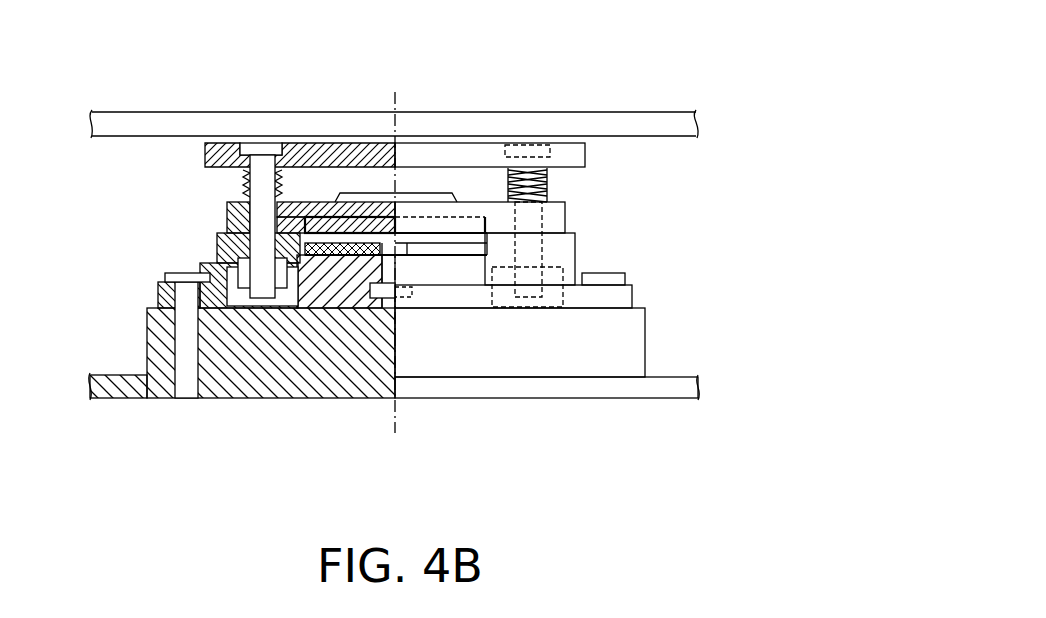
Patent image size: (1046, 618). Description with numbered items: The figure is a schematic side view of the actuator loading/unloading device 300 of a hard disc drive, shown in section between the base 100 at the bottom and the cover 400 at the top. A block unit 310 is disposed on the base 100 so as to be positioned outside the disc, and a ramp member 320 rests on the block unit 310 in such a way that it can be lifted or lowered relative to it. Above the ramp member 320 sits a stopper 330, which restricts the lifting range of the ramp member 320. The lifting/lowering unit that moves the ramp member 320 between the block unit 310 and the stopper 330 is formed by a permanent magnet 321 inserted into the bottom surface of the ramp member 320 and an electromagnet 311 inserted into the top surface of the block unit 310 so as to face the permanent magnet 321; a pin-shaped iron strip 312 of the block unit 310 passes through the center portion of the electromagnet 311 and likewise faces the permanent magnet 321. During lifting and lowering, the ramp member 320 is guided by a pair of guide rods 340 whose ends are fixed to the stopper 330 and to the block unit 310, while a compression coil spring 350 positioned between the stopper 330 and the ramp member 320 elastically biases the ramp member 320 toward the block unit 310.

The base 100 is at (135, 396).
The actuator loading/unloading device 300 is at (472, 319).
The block unit 310 is at (575, 251).
The electromagnet 311 is at (270, 258).
The pin-shaped iron strip 312 is at (374, 312).
The ramp member 320 is at (565, 215).
The permanent magnet 321 is at (268, 229).
The stopper 330 is at (582, 157).
The guide rod 340 is at (260, 176).
The compression coil spring 350 is at (548, 187).
The cover 400 is at (632, 125).